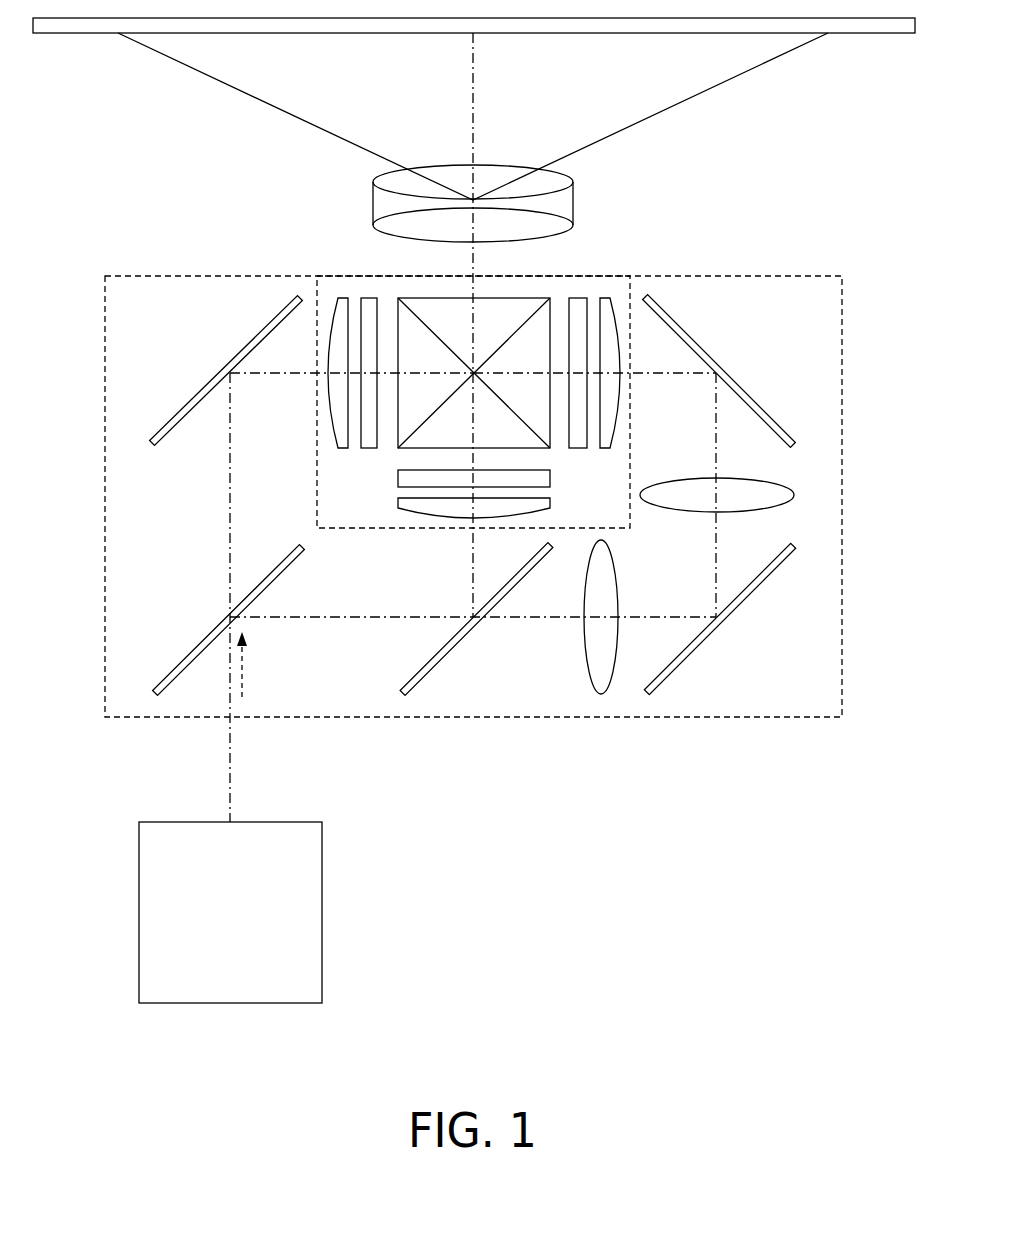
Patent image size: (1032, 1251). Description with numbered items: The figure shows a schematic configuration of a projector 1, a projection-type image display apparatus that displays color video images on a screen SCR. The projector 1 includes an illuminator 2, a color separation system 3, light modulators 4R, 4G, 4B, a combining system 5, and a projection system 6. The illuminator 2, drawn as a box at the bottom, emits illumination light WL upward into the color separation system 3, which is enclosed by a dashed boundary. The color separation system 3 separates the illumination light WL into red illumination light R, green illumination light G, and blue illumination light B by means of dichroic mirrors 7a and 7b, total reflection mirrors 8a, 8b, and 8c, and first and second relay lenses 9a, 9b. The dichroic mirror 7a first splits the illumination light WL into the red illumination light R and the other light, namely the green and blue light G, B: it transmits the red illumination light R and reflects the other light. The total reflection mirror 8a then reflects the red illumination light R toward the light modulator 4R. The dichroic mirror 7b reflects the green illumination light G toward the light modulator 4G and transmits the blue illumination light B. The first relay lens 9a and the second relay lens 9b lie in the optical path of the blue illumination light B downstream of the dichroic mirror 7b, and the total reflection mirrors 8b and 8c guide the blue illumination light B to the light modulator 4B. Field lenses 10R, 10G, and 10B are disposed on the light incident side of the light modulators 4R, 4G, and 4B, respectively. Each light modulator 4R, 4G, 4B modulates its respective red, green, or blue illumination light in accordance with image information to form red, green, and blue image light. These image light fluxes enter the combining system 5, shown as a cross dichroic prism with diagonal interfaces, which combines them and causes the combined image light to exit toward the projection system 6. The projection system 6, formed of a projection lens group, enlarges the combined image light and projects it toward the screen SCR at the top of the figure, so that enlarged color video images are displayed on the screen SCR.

The projector 1 is at (850, 249).
The illuminator 2 is at (322, 845).
The color separation system 3 is at (104, 432).
The light modulator 4R is at (370, 297).
The light modulator 4G is at (405, 478).
The light modulator 4B is at (578, 297).
The combining system 5 is at (488, 306).
The projection system 6 is at (452, 178).
The dichroic mirror 7a is at (188, 652).
The dichroic mirror 7b is at (450, 655).
The total reflection mirror 8a is at (202, 390).
The total reflection mirror 8b is at (747, 600).
The total reflection mirror 8c is at (748, 393).
The first relay lens 9a is at (583, 638).
The second relay lens 9b is at (790, 487).
The field lens 10R is at (340, 297).
The field lens 10G is at (405, 505).
The field lens 10B is at (603, 297).
The screen SCR is at (877, 35).
The illumination light WL is at (243, 676).
The red illumination light R is at (228, 520).
The green illumination light G is at (473, 567).
The blue illumination light B is at (715, 560).
The green illumination light and blue illumination light G, B is at (307, 625).